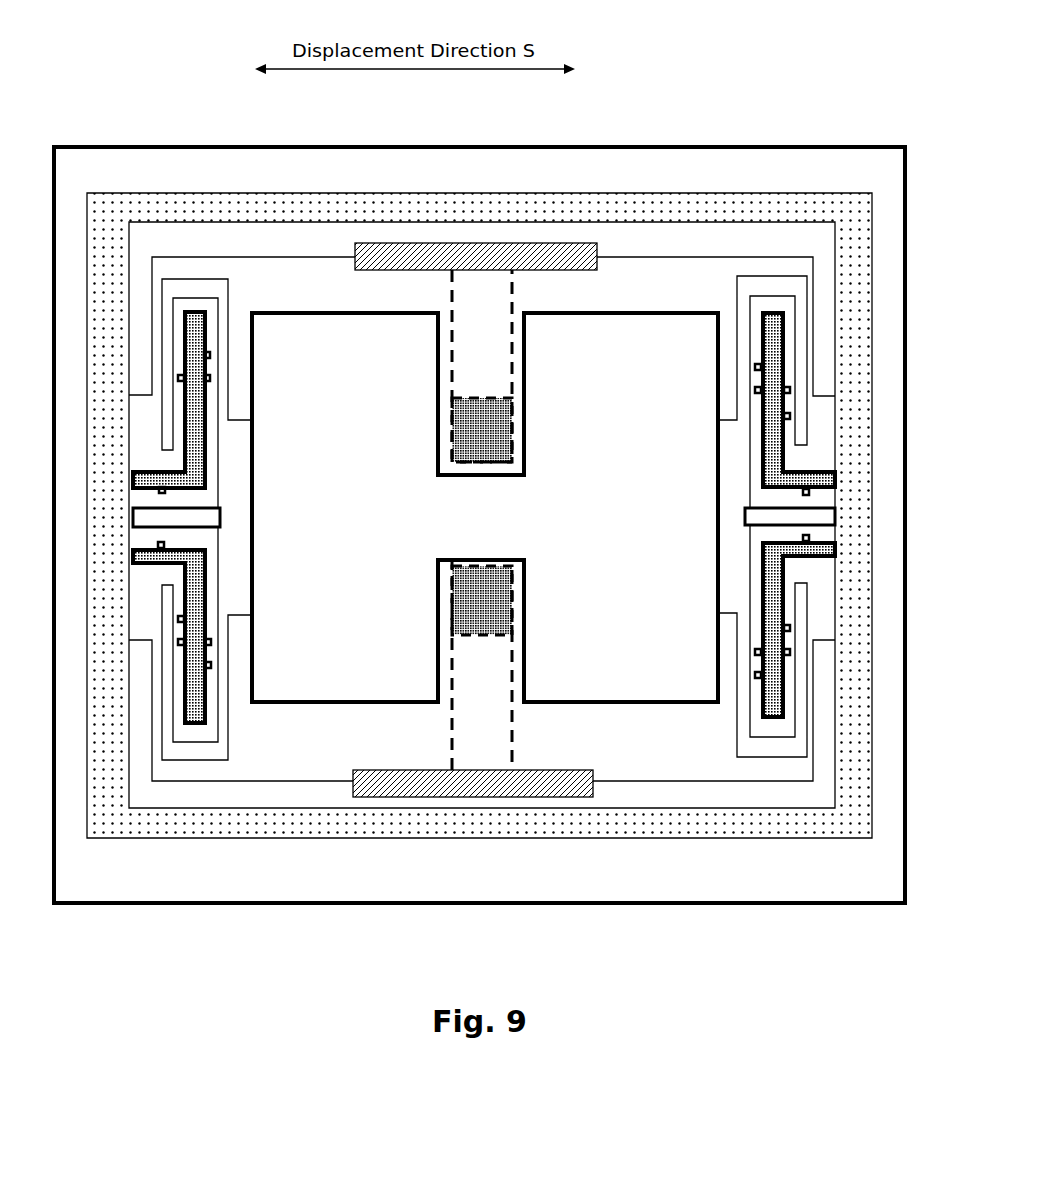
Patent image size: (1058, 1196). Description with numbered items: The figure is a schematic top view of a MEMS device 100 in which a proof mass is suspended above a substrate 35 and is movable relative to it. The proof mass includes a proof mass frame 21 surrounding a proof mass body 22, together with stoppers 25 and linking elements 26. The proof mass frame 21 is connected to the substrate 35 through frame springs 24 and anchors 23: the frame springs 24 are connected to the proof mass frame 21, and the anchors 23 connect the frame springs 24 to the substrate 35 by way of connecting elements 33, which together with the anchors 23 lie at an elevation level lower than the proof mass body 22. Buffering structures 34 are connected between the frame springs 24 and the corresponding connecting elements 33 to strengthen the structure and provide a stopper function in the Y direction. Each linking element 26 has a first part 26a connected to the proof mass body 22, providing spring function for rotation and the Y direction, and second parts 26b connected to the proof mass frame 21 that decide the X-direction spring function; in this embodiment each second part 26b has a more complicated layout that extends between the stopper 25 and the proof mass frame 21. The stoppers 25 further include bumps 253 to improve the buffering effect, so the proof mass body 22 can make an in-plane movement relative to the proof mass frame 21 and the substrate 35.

The MEMS device 100 is at (827, 72).
The proof mass frame 21 is at (527, 207).
The proof mass body 22 is at (627, 524).
The anchor 23 is at (494, 436).
The frame spring 24 is at (318, 257).
The stopper 25 is at (166, 472).
The linking element 26 is at (484, 518).
The first part 26a is at (222, 508).
The second part 26b is at (236, 421).
The connecting element 33 is at (494, 366).
The buffering structure 34 is at (598, 247).
The substrate 35 is at (313, 903).
The bump 253 is at (211, 356).